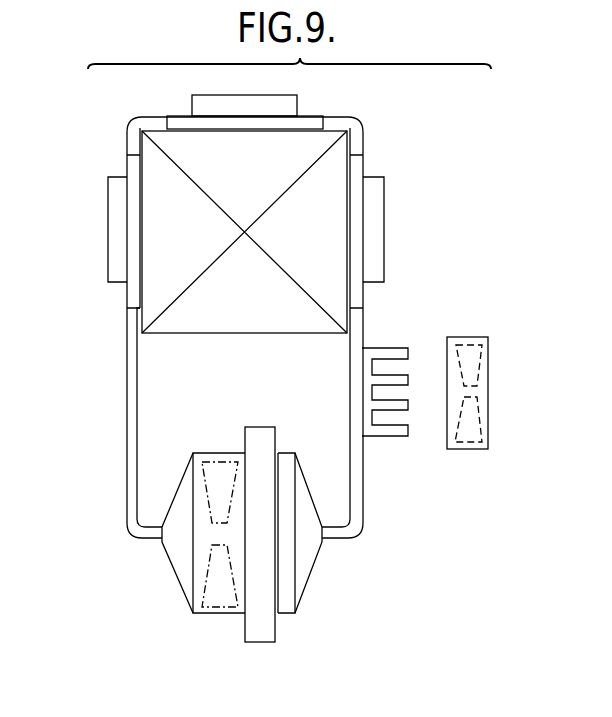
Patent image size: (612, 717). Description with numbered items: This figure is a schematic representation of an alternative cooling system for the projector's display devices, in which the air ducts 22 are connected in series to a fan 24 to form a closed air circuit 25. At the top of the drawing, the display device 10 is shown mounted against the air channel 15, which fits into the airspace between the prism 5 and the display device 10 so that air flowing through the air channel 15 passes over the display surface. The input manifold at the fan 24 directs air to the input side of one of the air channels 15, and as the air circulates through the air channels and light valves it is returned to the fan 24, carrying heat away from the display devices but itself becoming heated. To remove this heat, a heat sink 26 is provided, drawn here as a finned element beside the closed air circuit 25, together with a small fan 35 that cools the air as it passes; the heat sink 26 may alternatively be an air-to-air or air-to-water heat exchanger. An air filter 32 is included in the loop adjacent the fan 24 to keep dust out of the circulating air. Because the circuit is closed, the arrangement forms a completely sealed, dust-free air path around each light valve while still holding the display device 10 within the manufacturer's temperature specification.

The prism 5 is at (333, 157).
The display device 10 is at (283, 88).
The air channel 15 is at (310, 114).
The air duct 22 is at (127, 375).
The fan 24 is at (157, 573).
The closed air circuit 25 is at (111, 418).
The heat sink 26 is at (394, 348).
The air filter 32 is at (278, 622).
The small fan 35 is at (488, 370).